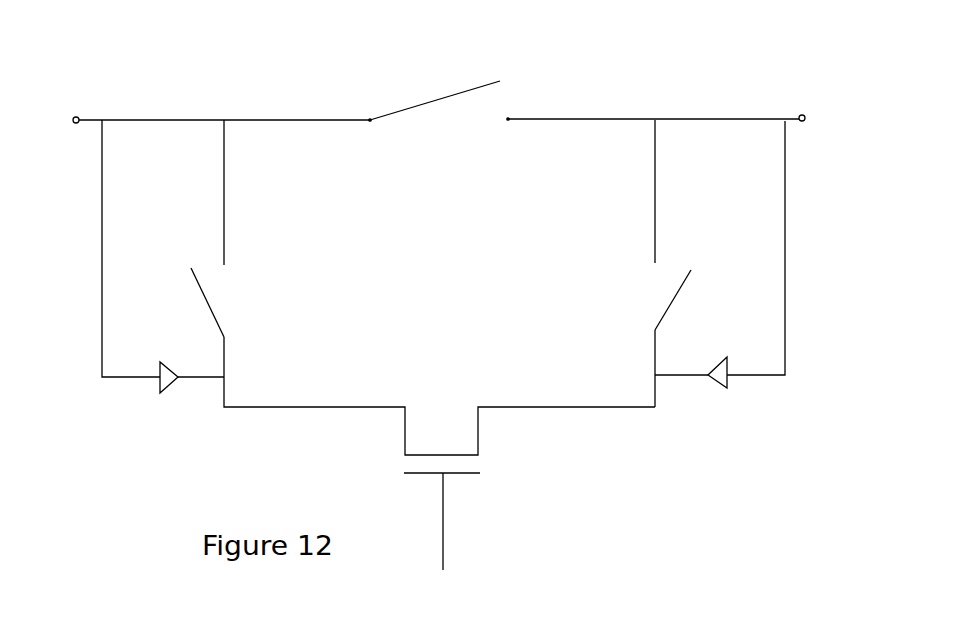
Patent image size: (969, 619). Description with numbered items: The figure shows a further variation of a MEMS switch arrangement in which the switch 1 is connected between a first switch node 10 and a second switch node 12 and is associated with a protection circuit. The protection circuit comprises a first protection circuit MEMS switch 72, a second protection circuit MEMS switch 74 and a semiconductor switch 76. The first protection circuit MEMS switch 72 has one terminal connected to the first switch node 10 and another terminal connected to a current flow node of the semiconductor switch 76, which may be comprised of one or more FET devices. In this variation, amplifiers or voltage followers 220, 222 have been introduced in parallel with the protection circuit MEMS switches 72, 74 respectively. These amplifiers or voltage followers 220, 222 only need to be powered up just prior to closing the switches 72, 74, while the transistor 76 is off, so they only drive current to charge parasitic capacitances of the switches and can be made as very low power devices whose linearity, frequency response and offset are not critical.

The switch 1 is at (455, 74).
The first switch node 10 is at (68, 124).
The second switch node 12 is at (808, 115).
The first protection circuit MEMS switch 72 is at (228, 297).
The second protection circuit MEMS switch 74 is at (650, 295).
The semiconductor switch 76 is at (470, 500).
The amplifier or voltage follower 220 is at (176, 394).
The amplifier or voltage follower 222 is at (713, 392).